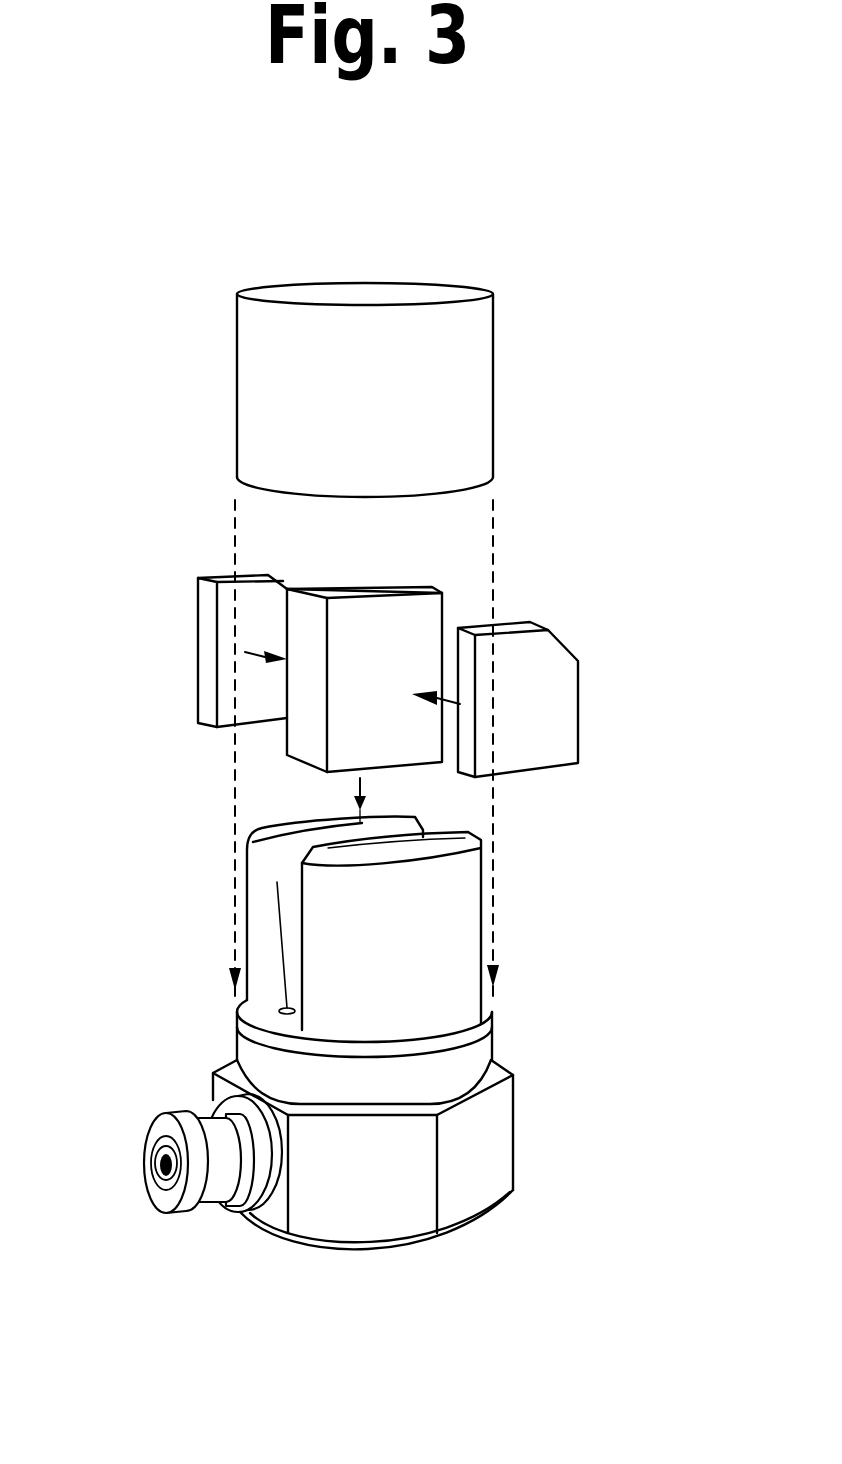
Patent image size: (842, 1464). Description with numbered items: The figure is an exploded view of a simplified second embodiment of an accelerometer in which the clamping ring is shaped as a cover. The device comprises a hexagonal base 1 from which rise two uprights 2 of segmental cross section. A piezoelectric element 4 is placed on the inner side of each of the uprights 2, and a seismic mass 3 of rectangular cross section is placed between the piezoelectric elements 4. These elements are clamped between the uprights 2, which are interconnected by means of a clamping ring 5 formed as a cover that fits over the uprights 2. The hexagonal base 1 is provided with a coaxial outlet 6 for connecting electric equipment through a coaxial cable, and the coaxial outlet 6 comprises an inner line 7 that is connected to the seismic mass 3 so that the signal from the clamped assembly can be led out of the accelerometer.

The hexagonal base 1 is at (352, 1208).
The uprights 2 is at (247, 889).
The seismic mass 3 is at (297, 740).
The piezoelectric element 4 is at (290, 588).
The clamping ring 5 is at (245, 356).
The coaxial outlet 6 is at (147, 1138).
The inner line 7 is at (282, 934).